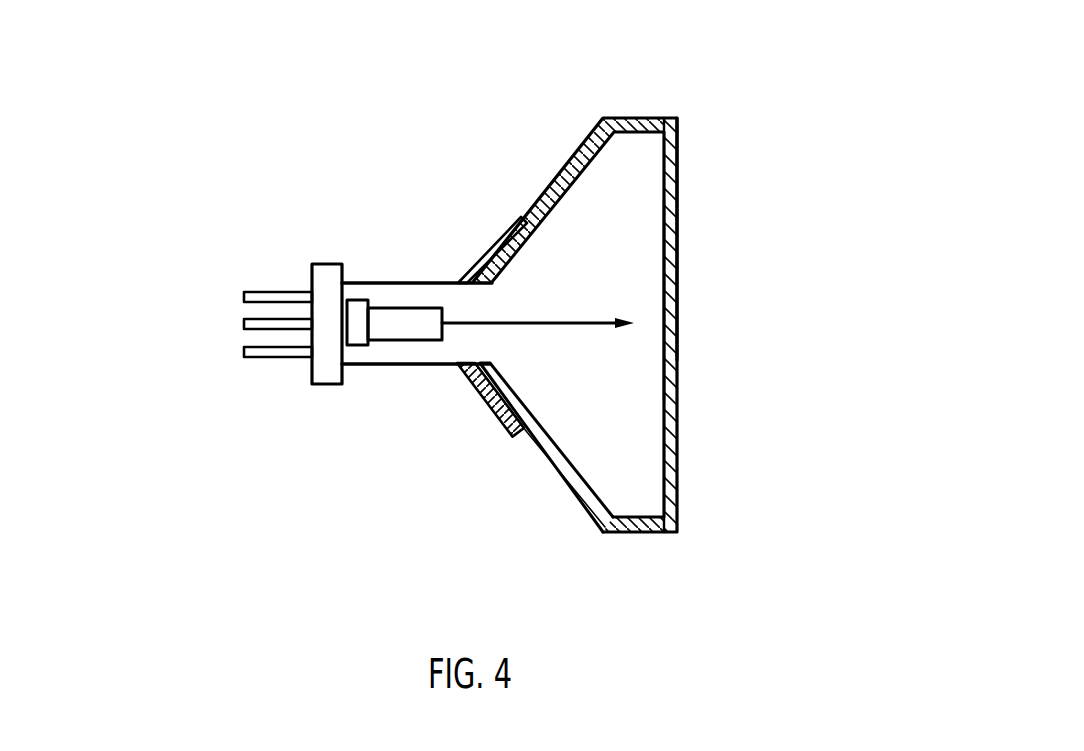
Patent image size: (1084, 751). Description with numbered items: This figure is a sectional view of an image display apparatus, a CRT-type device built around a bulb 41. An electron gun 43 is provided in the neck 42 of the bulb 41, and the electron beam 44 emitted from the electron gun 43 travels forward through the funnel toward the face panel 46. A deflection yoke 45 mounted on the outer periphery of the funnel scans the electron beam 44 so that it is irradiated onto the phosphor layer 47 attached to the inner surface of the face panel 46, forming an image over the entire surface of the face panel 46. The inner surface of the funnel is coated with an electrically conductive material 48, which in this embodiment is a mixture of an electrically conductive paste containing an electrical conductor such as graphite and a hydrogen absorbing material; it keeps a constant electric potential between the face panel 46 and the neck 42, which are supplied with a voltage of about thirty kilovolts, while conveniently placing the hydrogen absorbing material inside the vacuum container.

The bulb 41 is at (640, 532).
The neck 42 is at (398, 282).
The electron gun 43 is at (402, 340).
The electron beam 44 is at (580, 322).
The deflection yoke 45 is at (477, 257).
The face panel 46 is at (678, 237).
The phosphor layer 47 is at (678, 302).
The electrically conductive material 48 is at (570, 157).